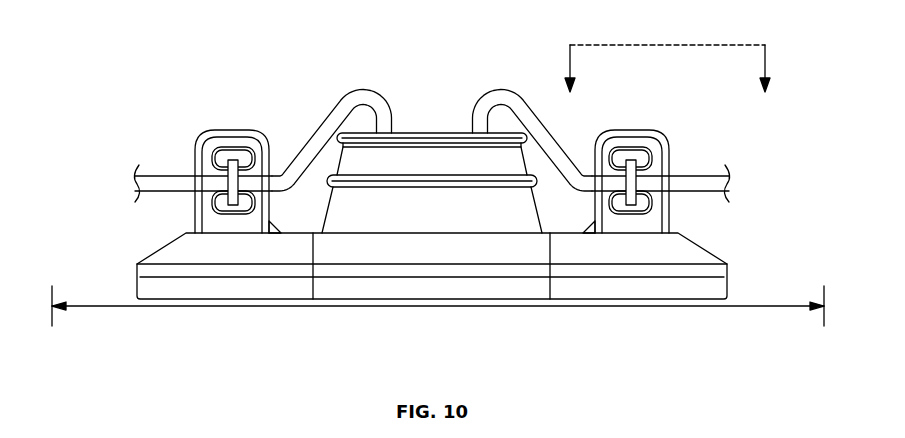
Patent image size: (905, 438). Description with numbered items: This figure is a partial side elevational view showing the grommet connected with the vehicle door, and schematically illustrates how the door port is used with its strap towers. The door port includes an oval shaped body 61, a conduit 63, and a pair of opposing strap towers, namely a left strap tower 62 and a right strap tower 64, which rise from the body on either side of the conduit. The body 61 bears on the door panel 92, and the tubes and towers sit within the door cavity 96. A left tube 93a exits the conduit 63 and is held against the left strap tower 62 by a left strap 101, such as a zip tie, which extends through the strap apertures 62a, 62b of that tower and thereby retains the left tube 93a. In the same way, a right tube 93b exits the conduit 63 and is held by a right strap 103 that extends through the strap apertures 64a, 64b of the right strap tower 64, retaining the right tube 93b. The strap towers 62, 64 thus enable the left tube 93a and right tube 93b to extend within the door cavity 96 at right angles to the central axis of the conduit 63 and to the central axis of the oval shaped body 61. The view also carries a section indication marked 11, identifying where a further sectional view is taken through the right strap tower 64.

The door cavity 96 is at (428, 125).
The left tube 93a is at (361, 90).
The right tube 93b is at (503, 90).
The left strap tower 62 is at (236, 217).
The strap aperture 62a is at (246, 156).
The strap aperture 62b is at (237, 203).
The right strap tower 64 is at (634, 217).
The strap aperture 64a is at (646, 156).
The strap aperture 64b is at (627, 203).
The left strap 101 is at (228, 185).
The right strap 103 is at (652, 196).
The conduit 63 is at (416, 205).
The oval shaped body 61 is at (458, 288).
The door panel 92 is at (794, 306).
The section line 11- 11 is at (666, 82).